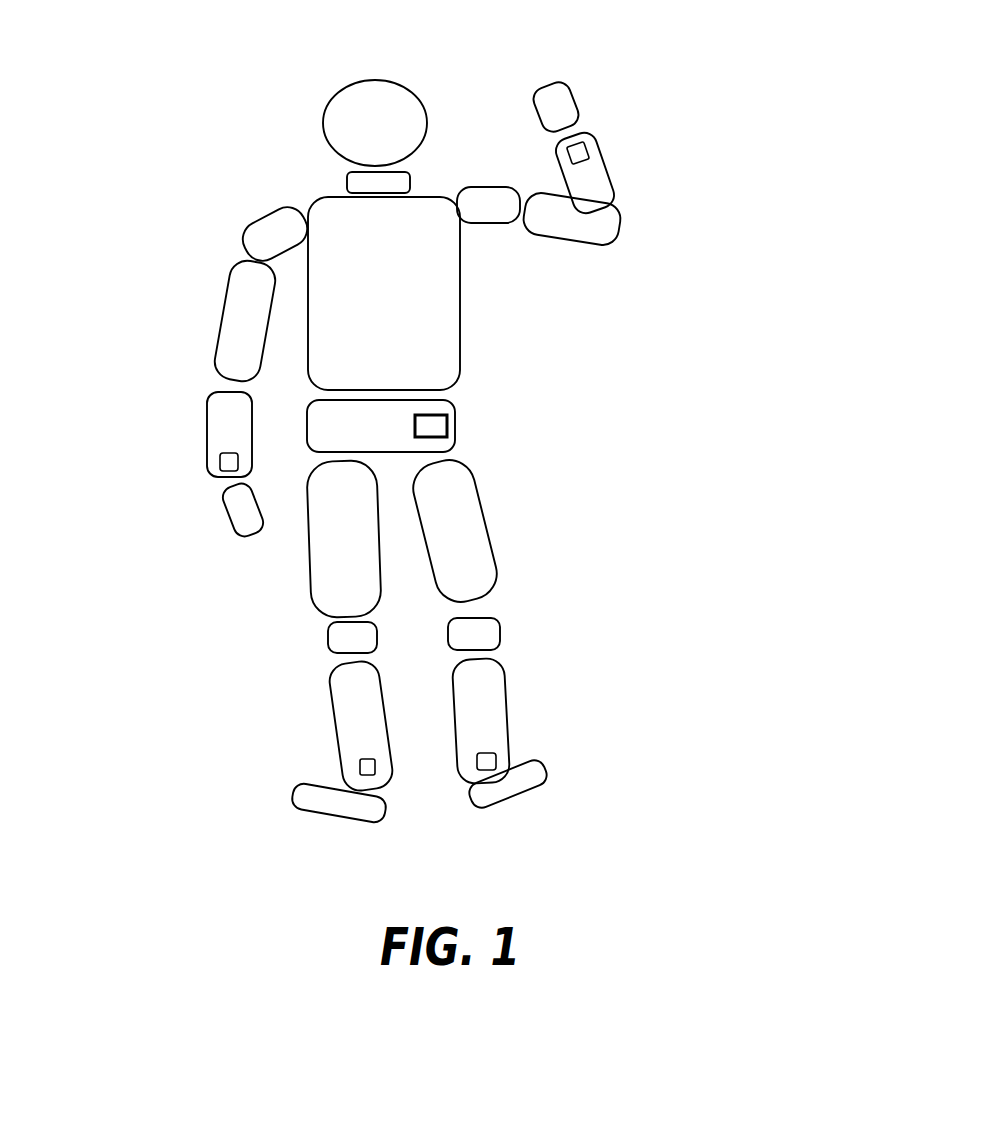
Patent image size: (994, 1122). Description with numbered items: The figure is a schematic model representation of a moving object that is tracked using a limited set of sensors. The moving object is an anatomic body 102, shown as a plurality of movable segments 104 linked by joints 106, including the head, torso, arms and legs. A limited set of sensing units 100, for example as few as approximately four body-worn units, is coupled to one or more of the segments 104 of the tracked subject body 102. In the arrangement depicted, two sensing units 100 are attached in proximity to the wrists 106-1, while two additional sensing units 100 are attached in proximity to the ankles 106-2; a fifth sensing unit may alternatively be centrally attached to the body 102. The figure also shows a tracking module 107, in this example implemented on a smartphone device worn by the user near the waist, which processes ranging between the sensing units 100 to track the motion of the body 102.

The sensing unit 100 is at (590, 152).
The anatomic body 102 is at (705, 178).
The movable segment 104 is at (565, 102).
The joint 106 is at (347, 193).
The wrist 106-1 is at (580, 128).
The ankle 106-2 is at (353, 792).
The tracking module 107 is at (440, 420).